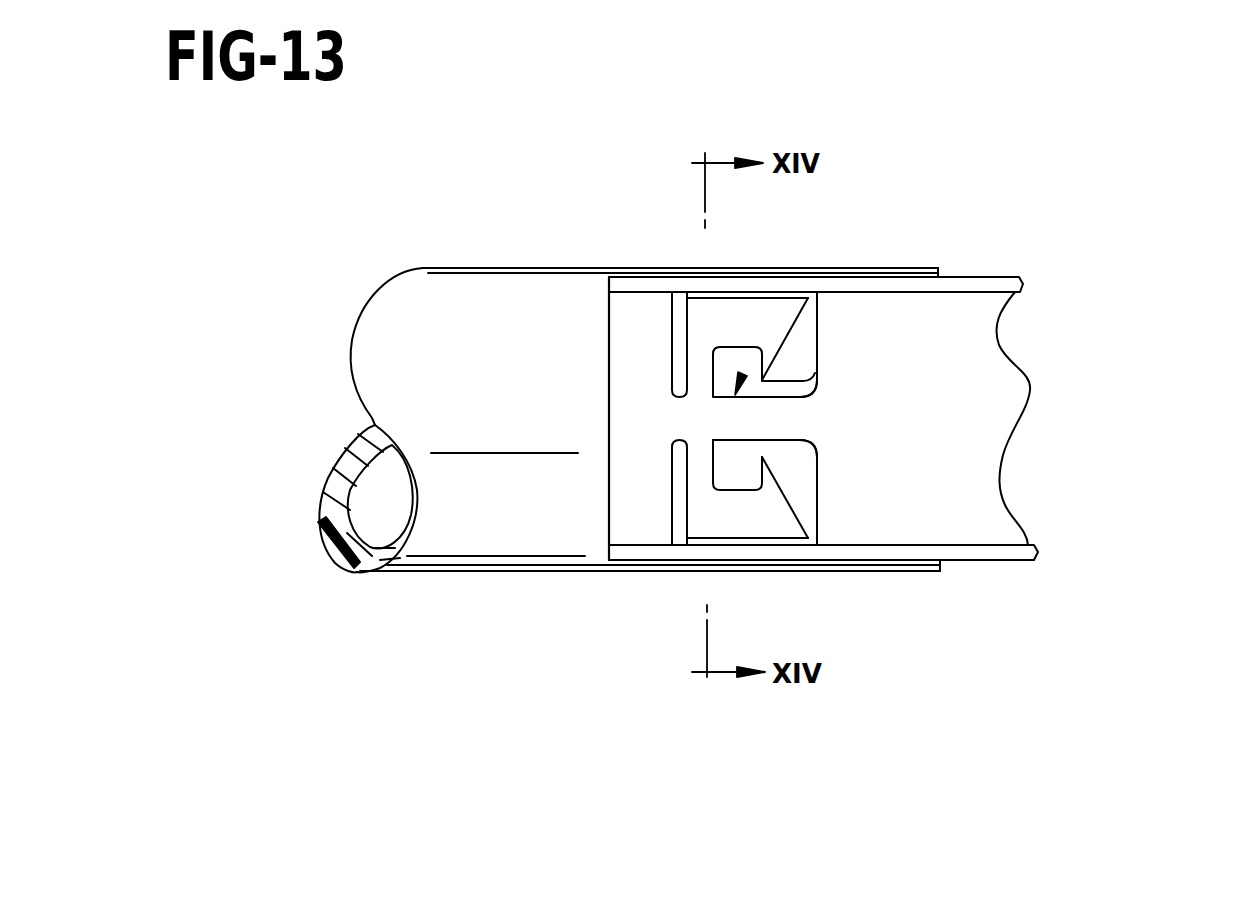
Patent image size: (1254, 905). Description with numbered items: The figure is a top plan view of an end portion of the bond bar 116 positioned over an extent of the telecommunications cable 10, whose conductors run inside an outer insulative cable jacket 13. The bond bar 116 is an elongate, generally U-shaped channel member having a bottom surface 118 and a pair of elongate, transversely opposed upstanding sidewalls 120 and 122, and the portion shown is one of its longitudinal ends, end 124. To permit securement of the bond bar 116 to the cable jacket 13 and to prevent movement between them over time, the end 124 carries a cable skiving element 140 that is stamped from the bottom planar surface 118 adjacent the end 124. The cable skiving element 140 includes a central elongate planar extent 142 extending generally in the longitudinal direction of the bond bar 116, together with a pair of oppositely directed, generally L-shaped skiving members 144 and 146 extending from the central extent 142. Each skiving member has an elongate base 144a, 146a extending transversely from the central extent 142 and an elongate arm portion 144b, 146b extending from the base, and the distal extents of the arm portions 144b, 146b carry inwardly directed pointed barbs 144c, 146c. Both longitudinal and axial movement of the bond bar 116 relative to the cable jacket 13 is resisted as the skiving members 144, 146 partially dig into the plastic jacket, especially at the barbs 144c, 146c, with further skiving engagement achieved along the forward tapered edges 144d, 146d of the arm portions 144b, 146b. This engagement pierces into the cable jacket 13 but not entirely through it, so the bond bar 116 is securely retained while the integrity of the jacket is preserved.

The telecommunications cable 10 is at (368, 637).
The outer insulative cable jacket 13 is at (330, 488).
The bond bar 116 is at (1138, 292).
The bottom surface 118 is at (973, 462).
The upstanding sidewall 120 is at (990, 553).
The upstanding sidewall 122 is at (997, 284).
The end of bond bar 124 is at (628, 387).
The cable skiving element 140 is at (742, 374).
The central elongate planar extent 142 is at (763, 420).
The skiving member 144 is at (712, 517).
The base of skiving member 144a is at (697, 462).
The arm portion 144b is at (771, 523).
The pointed barb 144c is at (803, 441).
The forward tapered edge 144d is at (790, 520).
The skiving member 146 is at (712, 318).
The base of skiving member 146a is at (697, 375).
The arm portion 146b is at (770, 313).
The pointed barb 146c is at (815, 379).
The forward tapered edge 146d is at (793, 327).